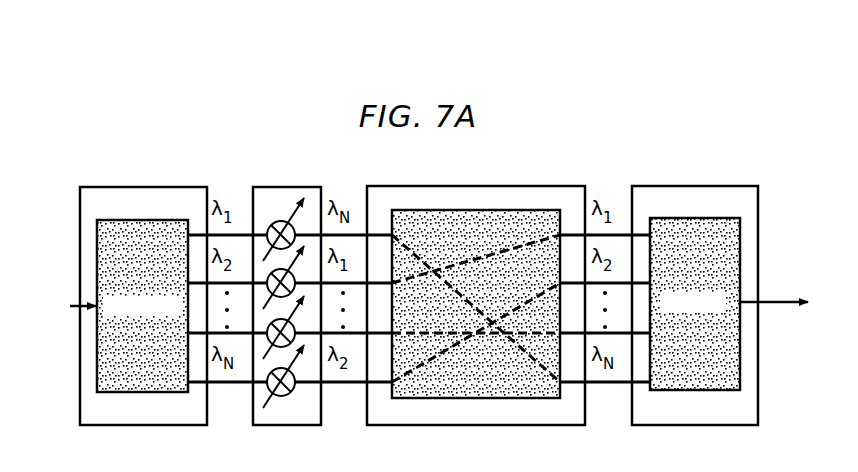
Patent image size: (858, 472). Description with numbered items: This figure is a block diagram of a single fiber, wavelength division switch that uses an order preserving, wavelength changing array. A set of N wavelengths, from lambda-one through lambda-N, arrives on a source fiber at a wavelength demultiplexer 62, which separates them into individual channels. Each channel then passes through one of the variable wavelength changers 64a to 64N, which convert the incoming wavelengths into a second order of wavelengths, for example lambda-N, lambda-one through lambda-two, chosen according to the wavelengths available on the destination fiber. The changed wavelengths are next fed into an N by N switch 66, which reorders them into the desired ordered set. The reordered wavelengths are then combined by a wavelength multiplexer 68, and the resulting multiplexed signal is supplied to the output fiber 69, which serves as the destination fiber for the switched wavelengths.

The wavelength demultiplexer 62 is at (171, 187).
The variable wavelength changer 64a is at (278, 221).
The variable wavelength changer 64N is at (282, 396).
The N×N switch 66 is at (493, 186).
The wavelength multiplexer 68 is at (672, 186).
The output fiber 69 is at (773, 302).